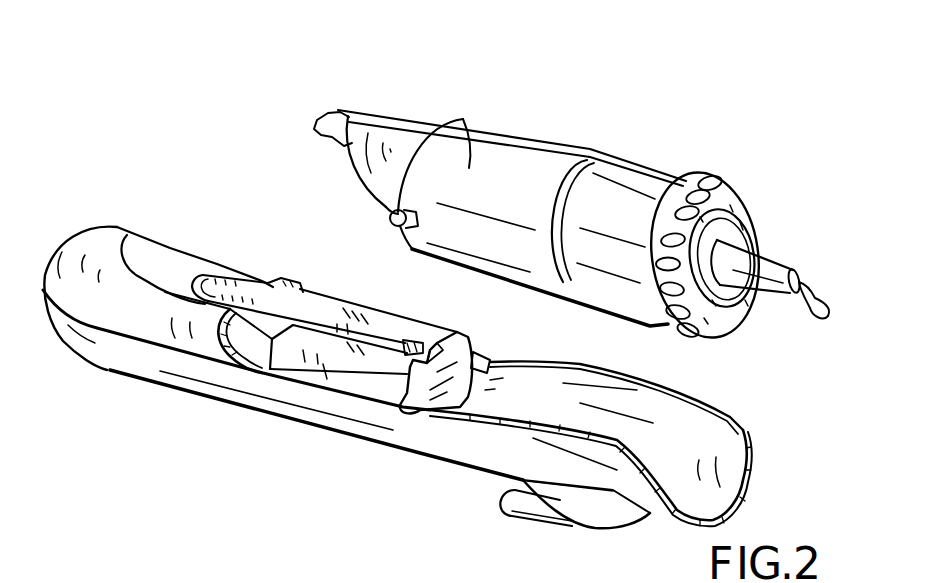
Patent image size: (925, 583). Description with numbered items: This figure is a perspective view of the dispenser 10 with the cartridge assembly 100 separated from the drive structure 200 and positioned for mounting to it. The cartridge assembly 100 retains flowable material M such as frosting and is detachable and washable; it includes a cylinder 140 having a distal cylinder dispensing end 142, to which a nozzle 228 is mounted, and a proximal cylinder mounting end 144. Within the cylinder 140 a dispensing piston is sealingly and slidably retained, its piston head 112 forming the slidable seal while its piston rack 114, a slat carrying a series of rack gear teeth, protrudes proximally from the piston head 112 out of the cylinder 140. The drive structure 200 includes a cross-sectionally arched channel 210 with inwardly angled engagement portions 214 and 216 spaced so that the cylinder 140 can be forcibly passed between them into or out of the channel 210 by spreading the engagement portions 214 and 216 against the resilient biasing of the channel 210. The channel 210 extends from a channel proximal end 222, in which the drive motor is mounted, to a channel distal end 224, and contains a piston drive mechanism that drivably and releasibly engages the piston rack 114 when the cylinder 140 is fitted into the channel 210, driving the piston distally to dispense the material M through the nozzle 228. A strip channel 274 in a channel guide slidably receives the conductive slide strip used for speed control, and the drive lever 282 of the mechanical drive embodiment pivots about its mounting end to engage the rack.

The dispenser 10 is at (289, 62).
The cartridge assembly 100 is at (611, 96).
The piston head 112 is at (592, 150).
The piston rack 114 is at (338, 128).
The cylinder 140 is at (466, 118).
The cylinder dispensing end 142 is at (694, 176).
The cylinder mounting end 144 is at (434, 132).
The nozzle 228 is at (770, 253).
The flowable material M is at (818, 290).
The drive structure 200 is at (204, 200).
The channel 210 is at (375, 425).
The engagement portion 214 is at (533, 438).
The engagement portion 216 is at (673, 413).
The channel proximal end 222 is at (100, 372).
The channel distal end 224 is at (637, 493).
The strip channel 274 is at (377, 335).
The drive lever 282 is at (520, 493).